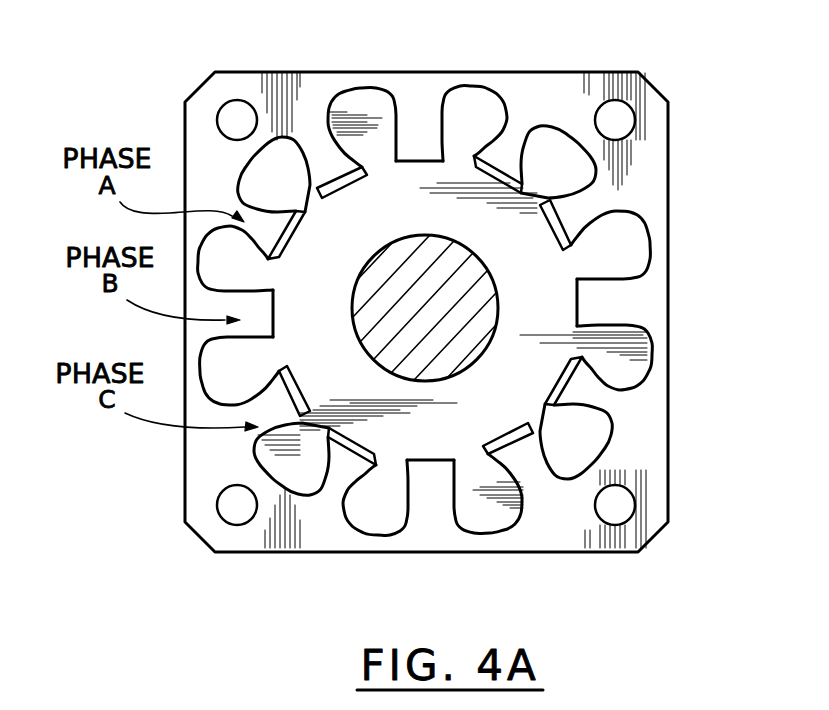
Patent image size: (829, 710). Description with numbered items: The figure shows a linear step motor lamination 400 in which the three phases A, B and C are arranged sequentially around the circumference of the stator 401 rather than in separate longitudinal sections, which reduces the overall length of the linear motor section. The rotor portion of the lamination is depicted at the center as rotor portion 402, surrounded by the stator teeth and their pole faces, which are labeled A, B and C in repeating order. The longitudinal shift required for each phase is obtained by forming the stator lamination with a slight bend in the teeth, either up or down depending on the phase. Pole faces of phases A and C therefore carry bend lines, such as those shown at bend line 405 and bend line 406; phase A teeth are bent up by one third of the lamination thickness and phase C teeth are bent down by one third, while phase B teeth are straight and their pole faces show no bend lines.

The linear step motor lamination 400 is at (466, 313).
The stator 401 is at (652, 406).
The rotor portion 402 is at (455, 425).
The bend line 405 is at (320, 177).
The bend line 406 is at (350, 477).